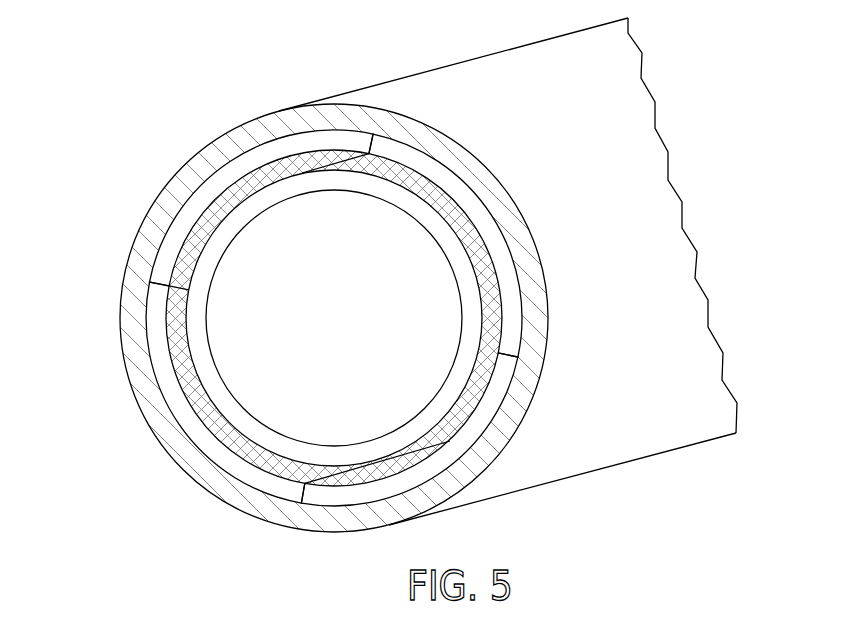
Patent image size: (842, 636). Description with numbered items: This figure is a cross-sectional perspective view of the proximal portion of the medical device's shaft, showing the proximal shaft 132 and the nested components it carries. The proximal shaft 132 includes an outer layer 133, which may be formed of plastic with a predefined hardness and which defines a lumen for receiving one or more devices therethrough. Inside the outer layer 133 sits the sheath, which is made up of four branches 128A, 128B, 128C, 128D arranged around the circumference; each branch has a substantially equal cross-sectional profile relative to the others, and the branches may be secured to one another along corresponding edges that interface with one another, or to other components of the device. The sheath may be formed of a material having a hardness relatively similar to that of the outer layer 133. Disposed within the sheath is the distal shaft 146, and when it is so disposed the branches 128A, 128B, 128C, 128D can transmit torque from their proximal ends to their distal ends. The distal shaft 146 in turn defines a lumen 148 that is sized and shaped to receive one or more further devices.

The proximal shaft 132 is at (428, 290).
The outer layer 133 is at (680, 438).
The branch 128A is at (182, 227).
The branch 128B is at (458, 183).
The branch 128C is at (508, 378).
The branch 128D is at (257, 485).
The distal shaft 146 is at (192, 338).
The lumen 148 is at (282, 323).